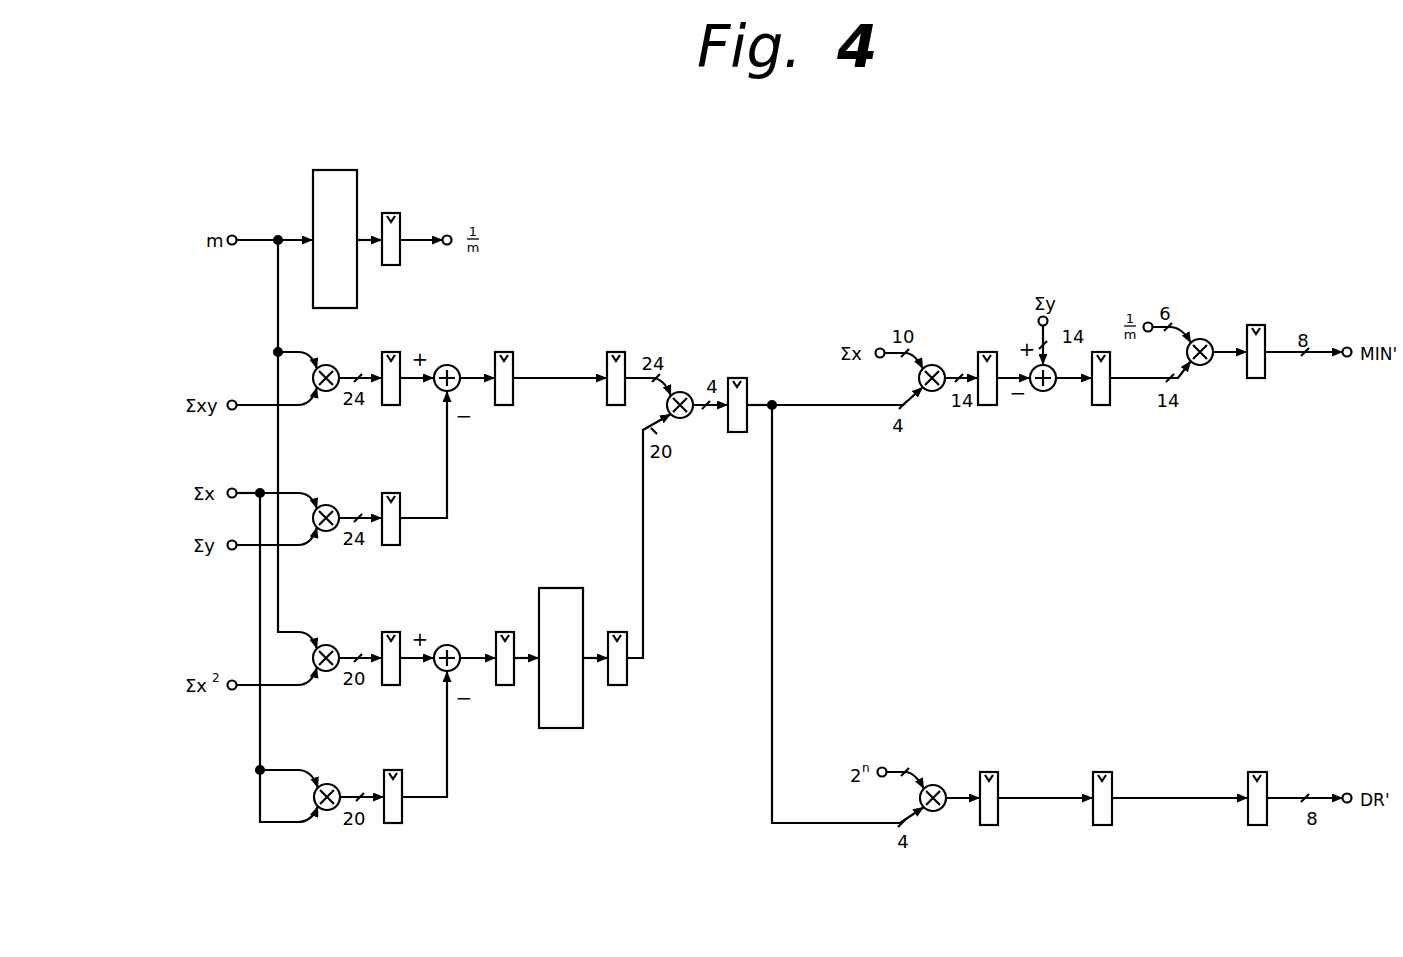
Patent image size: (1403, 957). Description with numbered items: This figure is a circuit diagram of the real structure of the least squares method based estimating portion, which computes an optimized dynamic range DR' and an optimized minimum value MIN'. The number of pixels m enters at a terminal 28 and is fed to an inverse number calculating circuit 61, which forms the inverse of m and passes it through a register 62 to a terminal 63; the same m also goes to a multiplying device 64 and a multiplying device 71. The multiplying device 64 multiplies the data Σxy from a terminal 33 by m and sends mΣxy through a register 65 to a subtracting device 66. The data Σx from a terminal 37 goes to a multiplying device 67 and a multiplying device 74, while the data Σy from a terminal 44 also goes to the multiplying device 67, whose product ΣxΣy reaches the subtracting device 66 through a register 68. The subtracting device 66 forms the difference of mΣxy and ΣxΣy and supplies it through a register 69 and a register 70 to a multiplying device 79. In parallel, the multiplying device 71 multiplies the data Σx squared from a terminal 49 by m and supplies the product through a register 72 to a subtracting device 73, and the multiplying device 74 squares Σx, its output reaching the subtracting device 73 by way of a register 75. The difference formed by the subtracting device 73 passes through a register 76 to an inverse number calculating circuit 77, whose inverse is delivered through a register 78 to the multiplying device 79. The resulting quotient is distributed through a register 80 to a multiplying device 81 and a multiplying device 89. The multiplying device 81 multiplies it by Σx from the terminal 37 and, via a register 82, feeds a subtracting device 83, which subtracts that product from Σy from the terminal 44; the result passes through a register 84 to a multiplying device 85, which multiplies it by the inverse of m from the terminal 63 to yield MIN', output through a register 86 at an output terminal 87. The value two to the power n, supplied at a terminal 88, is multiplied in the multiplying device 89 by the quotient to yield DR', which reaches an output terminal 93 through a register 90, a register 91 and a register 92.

The terminal 28 is at (233, 235).
The terminal 33 is at (233, 400).
The terminal 37 is at (233, 488).
The terminal 44 is at (232, 550).
The terminal 49 is at (233, 680).
The inverse number calculating circuit 61 is at (335, 170).
The register 62 is at (391, 215).
The terminal 63 is at (447, 235).
The multiplying device 64 is at (332, 365).
The register 65 is at (391, 352).
The subtracting device 66 is at (447, 365).
The multiplying device 67 is at (332, 505).
The register 68 is at (391, 493).
The register 69 is at (504, 352).
The register 70 is at (616, 352).
The multiplying device 71 is at (332, 645).
The register 72 is at (391, 632).
The subtracting device 73 is at (447, 645).
The multiplying device 74 is at (332, 784).
The register 75 is at (393, 770).
The register 76 is at (505, 632).
The inverse number calculating circuit 77 is at (553, 745).
The register 78 is at (617, 632).
The multiplying device 79 is at (687, 393).
The register 80 is at (737, 378).
The multiplying device 81 is at (940, 366).
The register 82 is at (990, 405).
The subtracting device 83 is at (1043, 391).
The register 84 is at (1101, 405).
The multiplying device 85 is at (1203, 365).
The register 86 is at (1256, 378).
The output terminal 87 is at (1347, 357).
The terminal 88 is at (882, 767).
The multiplying device 89 is at (938, 786).
The register 90 is at (989, 772).
The register 91 is at (1103, 772).
The register 92 is at (1257, 772).
The output terminal 93 is at (1347, 793).